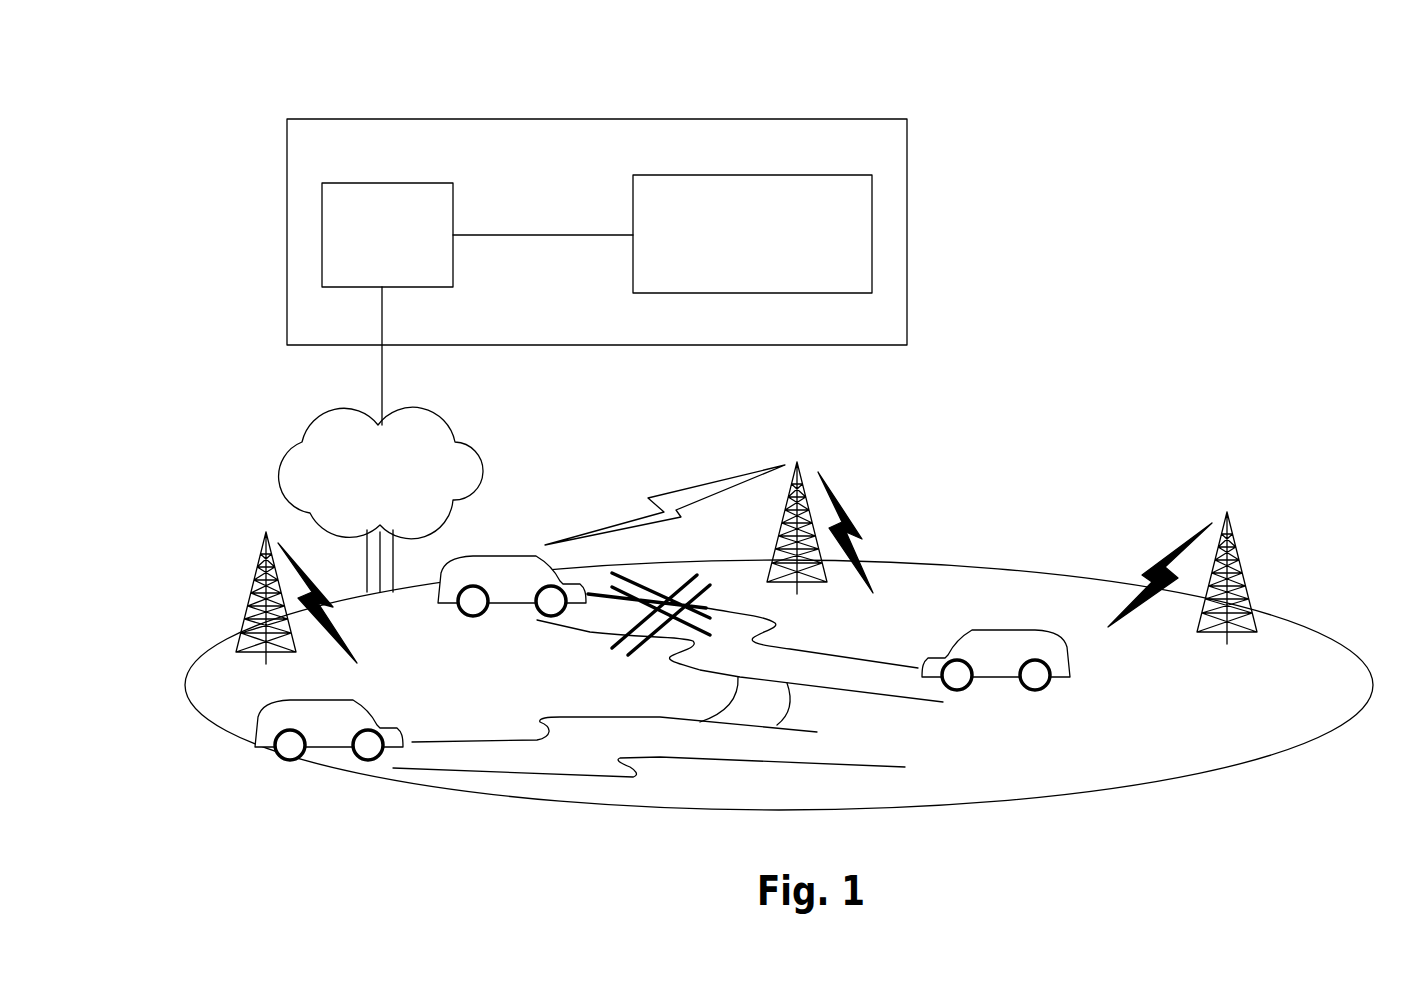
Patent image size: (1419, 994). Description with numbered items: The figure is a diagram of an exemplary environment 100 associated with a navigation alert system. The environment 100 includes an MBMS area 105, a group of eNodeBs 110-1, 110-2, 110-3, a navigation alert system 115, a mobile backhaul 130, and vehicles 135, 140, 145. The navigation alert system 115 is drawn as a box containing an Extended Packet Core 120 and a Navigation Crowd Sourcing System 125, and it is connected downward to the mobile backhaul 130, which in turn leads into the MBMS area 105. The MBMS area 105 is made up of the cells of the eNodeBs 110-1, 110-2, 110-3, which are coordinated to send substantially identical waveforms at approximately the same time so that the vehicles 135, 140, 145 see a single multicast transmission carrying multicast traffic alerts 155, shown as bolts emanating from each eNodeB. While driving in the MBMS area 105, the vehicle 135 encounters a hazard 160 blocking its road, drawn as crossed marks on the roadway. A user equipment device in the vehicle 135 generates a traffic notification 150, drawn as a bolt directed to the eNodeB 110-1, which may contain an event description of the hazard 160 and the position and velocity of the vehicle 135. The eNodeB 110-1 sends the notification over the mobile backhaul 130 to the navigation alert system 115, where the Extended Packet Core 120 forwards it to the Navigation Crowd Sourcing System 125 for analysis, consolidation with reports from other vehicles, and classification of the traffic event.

The environment 100 is at (232, 75).
The MBMS area 105 is at (743, 802).
The eNodeB 110-1 is at (778, 530).
The eNodeB 110-2 is at (260, 545).
The eNodeB 110-3 is at (1245, 590).
The navigation alert system 115 is at (800, 118).
The Extended Packet Core 120 is at (453, 200).
The Navigation Crowd Sourcing System 125 is at (633, 262).
The mobile backhaul 130 is at (465, 442).
The vehicle 135 is at (497, 553).
The vehicle 140 is at (390, 717).
The vehicle 145 is at (1003, 627).
The traffic notification 150 is at (655, 492).
The multicast traffic alerts 155 is at (342, 610).
The hazard 160 is at (617, 638).